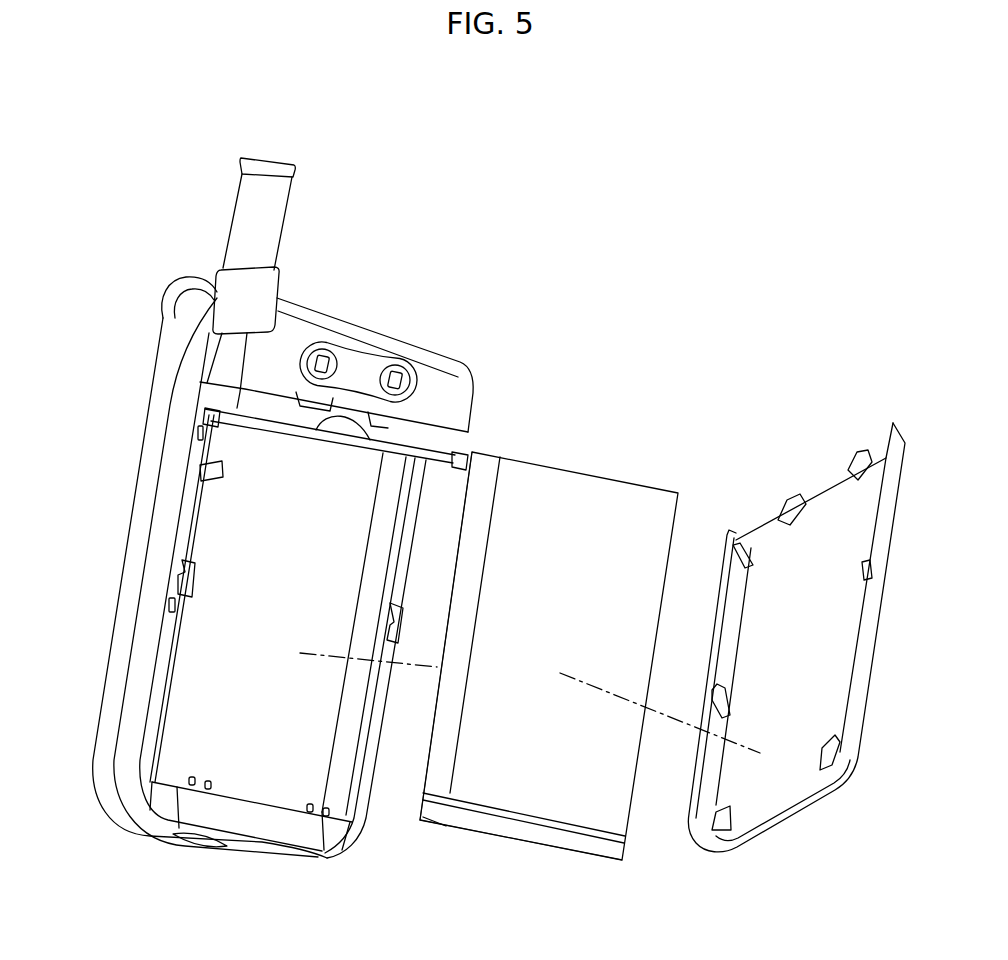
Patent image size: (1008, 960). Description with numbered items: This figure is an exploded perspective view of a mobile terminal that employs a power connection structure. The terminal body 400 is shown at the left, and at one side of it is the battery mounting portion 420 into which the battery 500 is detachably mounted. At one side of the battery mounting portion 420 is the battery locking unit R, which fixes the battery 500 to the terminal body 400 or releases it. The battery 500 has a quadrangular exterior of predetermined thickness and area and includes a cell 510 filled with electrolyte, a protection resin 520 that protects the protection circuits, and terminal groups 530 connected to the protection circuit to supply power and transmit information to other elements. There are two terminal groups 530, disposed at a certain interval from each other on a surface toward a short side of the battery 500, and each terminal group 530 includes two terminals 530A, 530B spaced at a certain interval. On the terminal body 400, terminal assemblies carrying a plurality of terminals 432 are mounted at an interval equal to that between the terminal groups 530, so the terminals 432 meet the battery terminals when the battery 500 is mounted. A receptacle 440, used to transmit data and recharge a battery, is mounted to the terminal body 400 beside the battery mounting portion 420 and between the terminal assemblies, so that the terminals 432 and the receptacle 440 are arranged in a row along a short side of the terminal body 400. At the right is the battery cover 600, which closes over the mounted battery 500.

The terminal body 400 is at (135, 440).
The battery mounting portion 420 is at (213, 533).
The terminals 432 is at (208, 785).
The receptacle 440 is at (203, 840).
The battery locking unit R is at (372, 350).
The battery 500 is at (531, 672).
The cell 510 is at (540, 478).
The protection resin 520 is at (620, 852).
The terminal groups 530 is at (497, 871).
The terminal 530A is at (457, 829).
The terminal 530B is at (523, 853).
The battery cover 600 is at (818, 473).